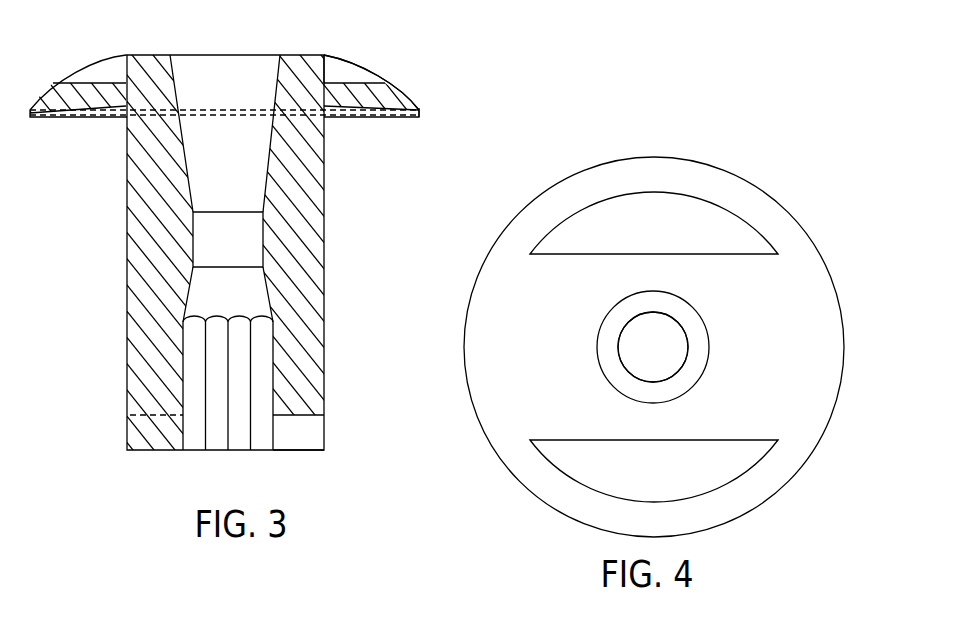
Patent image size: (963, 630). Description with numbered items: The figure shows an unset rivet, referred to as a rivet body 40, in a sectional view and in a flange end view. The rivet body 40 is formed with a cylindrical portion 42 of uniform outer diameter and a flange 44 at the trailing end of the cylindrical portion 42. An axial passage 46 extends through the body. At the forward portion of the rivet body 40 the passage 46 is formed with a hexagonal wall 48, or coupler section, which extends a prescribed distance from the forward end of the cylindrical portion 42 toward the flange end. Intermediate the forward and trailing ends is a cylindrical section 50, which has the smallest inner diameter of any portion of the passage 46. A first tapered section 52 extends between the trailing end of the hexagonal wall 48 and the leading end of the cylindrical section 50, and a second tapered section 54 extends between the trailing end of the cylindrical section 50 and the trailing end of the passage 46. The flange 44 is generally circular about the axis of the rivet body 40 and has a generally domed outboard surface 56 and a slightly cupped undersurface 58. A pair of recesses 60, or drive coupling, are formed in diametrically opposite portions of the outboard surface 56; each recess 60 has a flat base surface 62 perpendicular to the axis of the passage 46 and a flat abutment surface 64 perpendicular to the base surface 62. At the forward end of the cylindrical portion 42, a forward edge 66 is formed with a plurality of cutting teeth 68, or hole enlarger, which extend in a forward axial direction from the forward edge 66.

In FIG. 3, the rivet body 40 is at (366, 338).
In FIG. 4, the rivet body 40 is at (538, 160).
In FIG. 3, the cylindrical portion 42 is at (340, 214).
In FIG. 3, the flange 44 is at (416, 85).
In FIG. 4, the flange 44 is at (488, 228).
In FIG. 3, the axial passage 46 is at (194, 152).
In FIG. 4, the axial passage 46 is at (716, 312).
In FIG. 3, the hexagonal wall 48 is at (264, 444).
In FIG. 3, the cylindrical section 50 is at (194, 246).
In FIG. 4, the cylindrical section 50 is at (627, 368).
In FIG. 3, the first tapered section 52 is at (190, 286).
In FIG. 3, the second tapered section 54 is at (190, 192).
In FIG. 4, the second tapered section 54 is at (613, 330).
In FIG. 3, the domed outboard surface 56 is at (419, 101).
In FIG. 4, the domed outboard surface 56 is at (480, 292).
In FIG. 3, the cupped undersurface 58 is at (345, 108).
In FIG. 3, the recesses 60 is at (361, 53).
In FIG. 4, the recesses 60 is at (702, 192).
In FIG. 3, the flat base surface 62 is at (364, 82).
In FIG. 4, the flat base surface 62 is at (649, 205).
In FIG. 3, the flat abutment surface 64 is at (325, 72).
In FIG. 4, the flat abutment surface 64 is at (752, 250).
In FIG. 3, the forward edge 66 is at (318, 416).
In FIG. 3, the cutting teeth 68 is at (306, 452).